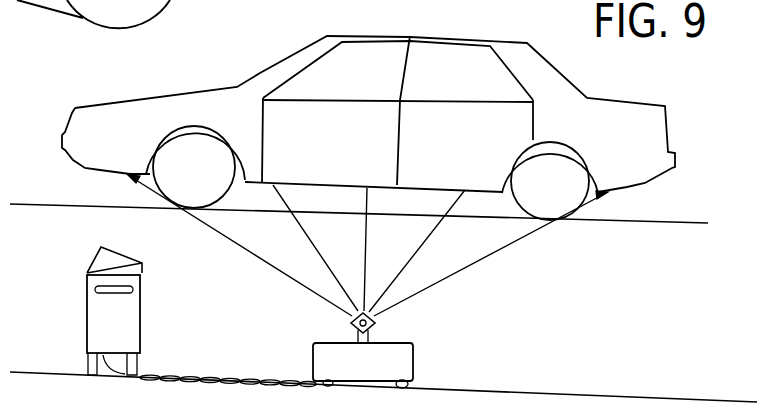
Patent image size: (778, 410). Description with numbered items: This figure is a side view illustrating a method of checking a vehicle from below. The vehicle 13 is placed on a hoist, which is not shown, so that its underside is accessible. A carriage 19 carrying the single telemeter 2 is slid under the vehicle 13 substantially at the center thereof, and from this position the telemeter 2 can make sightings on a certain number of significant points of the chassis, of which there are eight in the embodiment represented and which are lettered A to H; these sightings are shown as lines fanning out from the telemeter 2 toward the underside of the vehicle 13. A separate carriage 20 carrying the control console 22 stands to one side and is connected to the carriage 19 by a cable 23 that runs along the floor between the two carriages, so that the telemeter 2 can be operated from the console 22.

The vehicle 13 is at (623, 110).
The single telemeter 2 is at (377, 327).
The carriage 19 is at (408, 362).
The carriage 20 is at (123, 337).
The control console 22 is at (110, 261).
The cable 23 is at (217, 373).